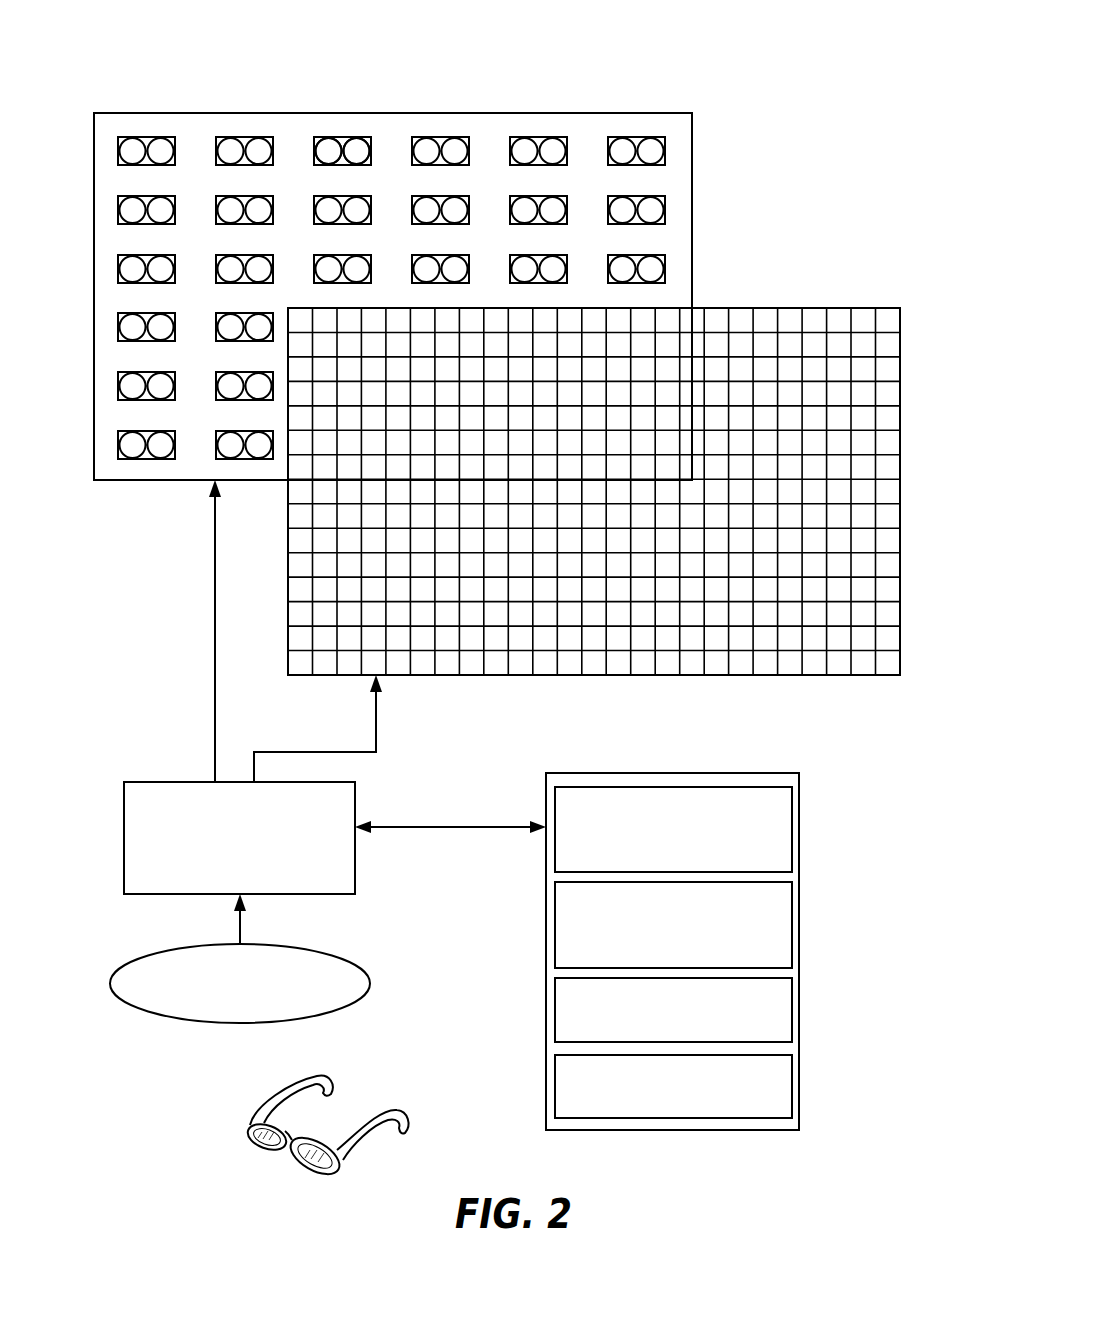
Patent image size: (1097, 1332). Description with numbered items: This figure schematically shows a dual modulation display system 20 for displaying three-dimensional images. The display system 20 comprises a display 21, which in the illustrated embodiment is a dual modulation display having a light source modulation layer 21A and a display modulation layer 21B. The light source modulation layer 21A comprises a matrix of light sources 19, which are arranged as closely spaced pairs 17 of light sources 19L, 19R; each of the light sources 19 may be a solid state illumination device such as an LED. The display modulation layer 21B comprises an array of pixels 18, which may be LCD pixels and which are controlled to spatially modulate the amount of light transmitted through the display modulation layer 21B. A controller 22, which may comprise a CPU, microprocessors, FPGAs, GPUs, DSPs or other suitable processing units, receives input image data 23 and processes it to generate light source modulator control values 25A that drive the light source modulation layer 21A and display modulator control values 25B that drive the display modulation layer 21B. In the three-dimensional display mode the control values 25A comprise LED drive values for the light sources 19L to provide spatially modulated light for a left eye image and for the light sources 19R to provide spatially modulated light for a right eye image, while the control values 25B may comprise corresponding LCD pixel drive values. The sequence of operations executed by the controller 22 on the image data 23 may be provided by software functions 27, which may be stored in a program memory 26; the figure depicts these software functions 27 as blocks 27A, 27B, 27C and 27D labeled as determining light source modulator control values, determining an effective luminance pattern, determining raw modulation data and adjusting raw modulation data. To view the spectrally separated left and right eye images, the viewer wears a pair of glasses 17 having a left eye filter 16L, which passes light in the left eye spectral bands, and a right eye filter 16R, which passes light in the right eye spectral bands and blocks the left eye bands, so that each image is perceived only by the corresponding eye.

The dual modulation display system 20 is at (745, 86).
The display 21 is at (796, 188).
The light source modulation layer 21A is at (692, 210).
The display modulation layer 21B is at (742, 308).
The light sources 19 is at (453, 152).
The left eye light source 19L is at (328, 152).
The right eye light source 19R is at (357, 152).
The pair of light sources / pair of glasses 17 is at (293, 626).
The pixels 18 is at (788, 318).
The light source modulator control values 25A is at (213, 670).
The display modulator control values 25B is at (377, 742).
The controller 22 is at (186, 782).
The image data 23 is at (318, 952).
The program memory 26 is at (630, 773).
The software functions 27 is at (723, 923).
The determine light source modulator control values 27A is at (792, 828).
The determine effective luminance pattern 27B is at (792, 923).
The determine raw modulation data 27C is at (792, 1012).
The adjust raw modulation data 27D is at (792, 1087).
The right eye filter 16R is at (250, 1130).
The left eye filter 16L is at (335, 1158).